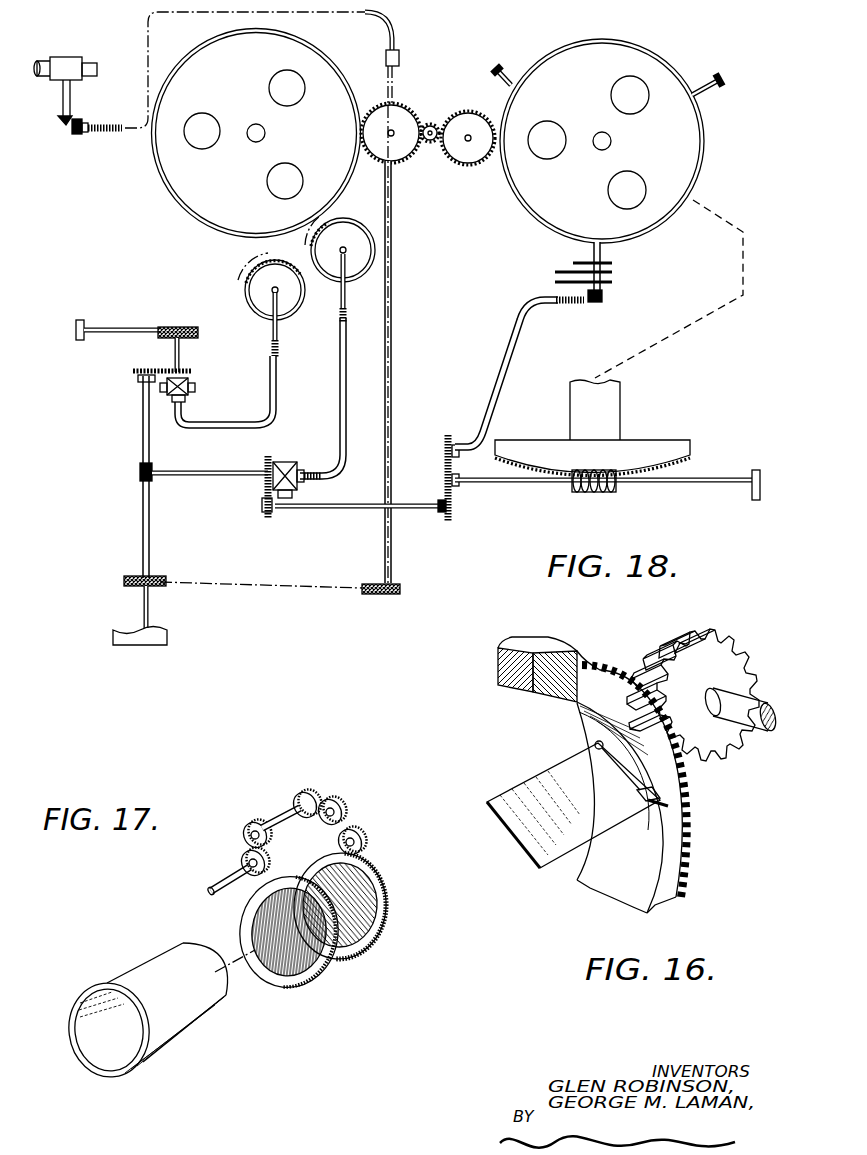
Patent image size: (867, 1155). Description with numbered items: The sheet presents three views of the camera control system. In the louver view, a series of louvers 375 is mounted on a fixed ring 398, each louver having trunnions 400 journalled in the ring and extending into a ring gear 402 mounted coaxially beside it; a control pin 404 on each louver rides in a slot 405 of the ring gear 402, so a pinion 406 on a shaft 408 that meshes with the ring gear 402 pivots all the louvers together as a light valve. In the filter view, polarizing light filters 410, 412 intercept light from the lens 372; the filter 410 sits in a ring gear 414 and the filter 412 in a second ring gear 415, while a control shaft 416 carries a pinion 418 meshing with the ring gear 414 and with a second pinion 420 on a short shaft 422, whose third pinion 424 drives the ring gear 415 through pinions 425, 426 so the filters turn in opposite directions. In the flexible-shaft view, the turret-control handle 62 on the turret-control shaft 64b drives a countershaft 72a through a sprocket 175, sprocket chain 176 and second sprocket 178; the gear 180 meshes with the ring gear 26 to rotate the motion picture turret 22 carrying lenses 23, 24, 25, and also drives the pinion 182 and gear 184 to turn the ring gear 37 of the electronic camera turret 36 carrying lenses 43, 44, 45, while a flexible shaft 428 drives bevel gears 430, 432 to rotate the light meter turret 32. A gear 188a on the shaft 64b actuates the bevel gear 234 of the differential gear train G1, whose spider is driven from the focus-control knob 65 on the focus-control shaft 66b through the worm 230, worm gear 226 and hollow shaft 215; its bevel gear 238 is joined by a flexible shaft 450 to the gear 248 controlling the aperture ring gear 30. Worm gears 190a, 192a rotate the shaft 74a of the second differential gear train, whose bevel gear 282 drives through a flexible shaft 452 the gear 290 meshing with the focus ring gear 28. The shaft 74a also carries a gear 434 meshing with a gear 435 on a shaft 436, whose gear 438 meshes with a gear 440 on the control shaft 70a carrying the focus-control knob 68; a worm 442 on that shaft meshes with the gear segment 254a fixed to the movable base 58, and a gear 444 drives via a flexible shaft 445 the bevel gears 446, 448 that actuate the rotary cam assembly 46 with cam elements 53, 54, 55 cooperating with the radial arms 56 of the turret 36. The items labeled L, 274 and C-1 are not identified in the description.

In FIG. 18, the turret 22 is at (172, 205).
In FIG. 18, the lens 23 is at (302, 172).
In FIG. 18, the lens 24 is at (202, 113).
In FIG. 18, the lens 25 is at (305, 84).
In FIG. 18, the ring gear 26 is at (337, 76).
In FIG. 18, the second ring gear 28 is at (352, 222).
In FIG. 18, the third ring gear 30 is at (248, 268).
In FIG. 18, the light meter turret 32 is at (83, 57).
In FIG. 18, the lamp L is at (88, 56).
In FIG. 18, the turret 36 is at (680, 68).
In FIG. 18, the ring gear 37 is at (518, 206).
In FIG. 18, the lens 43 is at (548, 120).
In FIG. 18, the lens 44 is at (648, 183).
In FIG. 18, the lens 45 is at (648, 106).
In FIG. 18, the rotary cam assembly 46 is at (607, 276).
In FIG. 18, the cam element 53 is at (578, 262).
In FIG. 18, the cam element 54 is at (560, 272).
In FIG. 18, the cam element 55 is at (560, 283).
In FIG. 18, the radial arms 56 is at (510, 68).
In FIG. 18, the movable base 58 is at (612, 402).
In FIG. 18, the turret-control handle 62 is at (144, 648).
In FIG. 18, the turret-control shaft 64b is at (150, 613).
In FIG. 18, the focus-control knob 65 is at (74, 331).
In FIG. 18, the focus-control shaft 66b is at (127, 328).
In FIG. 18, the focus-control knob 68 is at (756, 500).
In FIG. 18, the focus-control shaft 70a is at (700, 486).
In FIG. 18, the countershaft 72a is at (386, 560).
In FIG. 18, the shaft 74a is at (205, 478).
In FIG. 18, the sprocket 175 is at (158, 578).
In FIG. 18, the sprocket chain 176 is at (293, 590).
In FIG. 18, the second sprocket 178 is at (386, 596).
In FIG. 18, the gear 180 is at (400, 118).
In FIG. 18, the pinion 182 is at (431, 149).
In FIG. 18, the gear 184 is at (470, 158).
In FIG. 18, the gear 188a is at (135, 372).
In FIG. 18, the worm gear 190a is at (140, 471).
In FIG. 18, the second worm gear 192a is at (142, 481).
In FIG. 18, the hollow shaft 215 is at (182, 352).
In FIG. 18, the worm gear 226 is at (200, 334).
In FIG. 18, the worm 230 is at (178, 327).
In FIG. 18, the bevel gear 234 is at (172, 372).
In FIG. 18, the bevel gear 238 is at (178, 412).
In FIG. 18, the gear 248 is at (291, 296).
In FIG. 18, the gear segment 254a is at (194, 373).
In FIG. 18, the gear 274 is at (277, 463).
In FIG. 18, the bevel gear 282 is at (305, 470).
In FIG. 18, the gear 290 is at (365, 258).
In FIG. 17, the lens 372 is at (118, 1035).
In FIG. 16, the louvers 375 is at (568, 786).
In FIG. 16, the fixed ring 398 is at (496, 671).
In FIG. 16, the trunnions 400 is at (595, 746).
In FIG. 16, the ring gear 402 is at (610, 672).
In FIG. 16, the control pin 404 is at (660, 794).
In FIG. 16, the slot 405 is at (666, 806).
In FIG. 16, the pinion 406 is at (732, 666).
In FIG. 16, the shaft 408 is at (752, 716).
In FIG. 17, the polarizing light filter 410 is at (292, 960).
In FIG. 17, the polarizing light filter 412 is at (350, 936).
In FIG. 17, the ring gear 414 is at (313, 975).
In FIG. 17, the second ring gear 415 is at (387, 920).
In FIG. 17, the control shaft 416 is at (230, 878).
In FIG. 17, the pinion 418 is at (264, 873).
In FIG. 17, the second pinion 420 is at (248, 826).
In FIG. 17, the short shaft 422 is at (285, 818).
In FIG. 17, the third pinion 424 is at (306, 794).
In FIG. 17, the pinion 425 is at (338, 810).
In FIG. 17, the pinion 426 is at (360, 846).
In FIG. 18, the flexible shaft 428 is at (400, 44).
In FIG. 18, the bevel gear 430 is at (77, 136).
In FIG. 18, the second bevel gear 432 is at (62, 122).
In FIG. 18, the gear 434 is at (264, 473).
In FIG. 18, the gear 435 is at (265, 516).
In FIG. 18, the shaft 436 is at (320, 511).
In FIG. 18, the gear 438 is at (446, 512).
In FIG. 18, the gear 440 is at (428, 478).
In FIG. 18, the worm 442 is at (598, 496).
In FIG. 18, the gear 444 is at (432, 417).
In FIG. 18, the flexible shaft 445 is at (502, 374).
In FIG. 18, the bevel gear 446 is at (592, 303).
In FIG. 18, the second bevel gear 448 is at (604, 297).
In FIG. 18, the flexible shaft 450 is at (276, 391).
In FIG. 18, the flexible shaft 452 is at (347, 373).
In FIG. 18, the differential gear train G1 is at (196, 393).
In FIG. 18, the cam C-1 is at (172, 640).